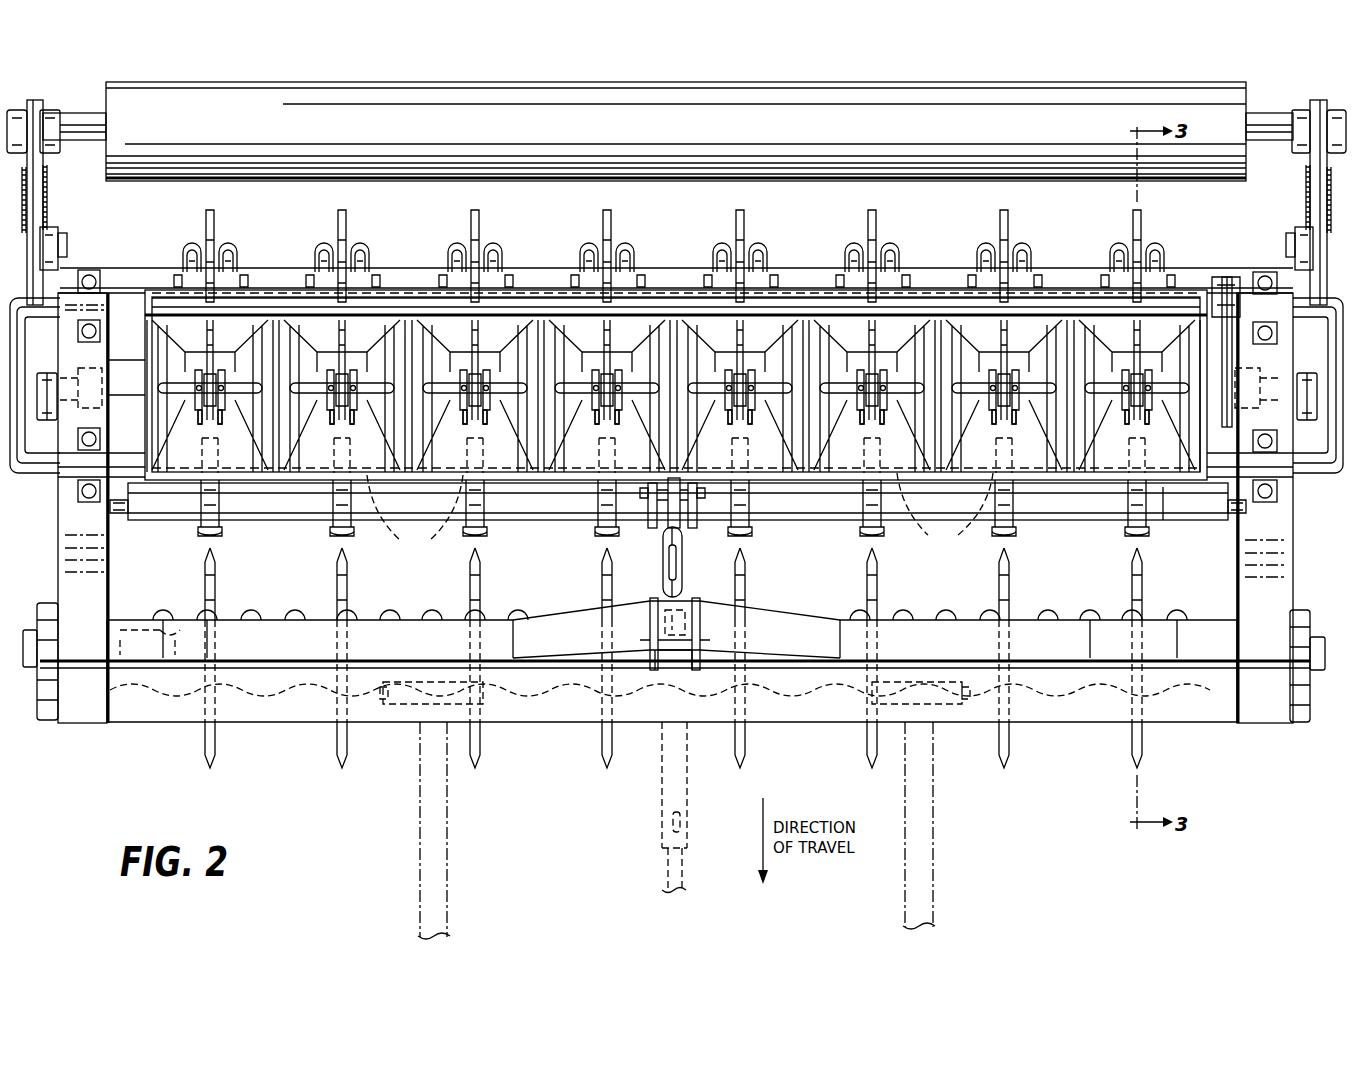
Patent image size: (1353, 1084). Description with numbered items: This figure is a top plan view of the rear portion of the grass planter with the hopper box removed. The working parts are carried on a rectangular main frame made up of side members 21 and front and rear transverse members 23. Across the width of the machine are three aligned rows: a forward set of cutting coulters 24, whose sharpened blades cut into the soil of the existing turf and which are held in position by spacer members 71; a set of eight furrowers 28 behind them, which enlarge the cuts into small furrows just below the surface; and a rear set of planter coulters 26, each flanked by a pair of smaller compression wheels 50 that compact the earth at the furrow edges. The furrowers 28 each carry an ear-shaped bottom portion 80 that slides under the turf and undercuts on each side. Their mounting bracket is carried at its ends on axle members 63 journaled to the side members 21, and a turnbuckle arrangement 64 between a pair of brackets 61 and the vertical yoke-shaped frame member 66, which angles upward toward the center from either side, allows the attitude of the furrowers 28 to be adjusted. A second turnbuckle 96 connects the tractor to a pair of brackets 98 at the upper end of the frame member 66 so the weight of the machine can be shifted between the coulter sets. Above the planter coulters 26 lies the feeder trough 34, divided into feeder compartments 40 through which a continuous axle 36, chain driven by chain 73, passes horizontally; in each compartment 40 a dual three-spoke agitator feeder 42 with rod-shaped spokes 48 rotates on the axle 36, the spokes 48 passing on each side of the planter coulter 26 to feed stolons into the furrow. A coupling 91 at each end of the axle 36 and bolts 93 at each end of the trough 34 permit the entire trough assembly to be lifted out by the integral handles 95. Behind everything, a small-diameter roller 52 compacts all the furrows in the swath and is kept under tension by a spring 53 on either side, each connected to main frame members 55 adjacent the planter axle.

The side members 21 is at (65, 583).
The front and rear transverse members 23 is at (545, 272).
The cutting coulters 24 is at (216, 577).
The planter coulters 26 is at (215, 216).
The furrowers 28 is at (673, 497).
The feeder trough 34 is at (1163, 490).
The continuous axle 36 is at (123, 382).
The feeder compartments 40 is at (425, 350).
The agitator feeder 42 is at (198, 412).
The spokes 48 is at (350, 416).
The compression wheels 50 is at (190, 247).
The roller 52 is at (692, 137).
The spring 53 is at (43, 173).
The main frame members 55 is at (43, 200).
The brackets 61 is at (652, 528).
The axle members 63 is at (123, 515).
The turnbuckle arrangement 64 is at (682, 556).
The vertical yoke-shaped frame member 66 is at (494, 637).
The spacer members 71 is at (303, 612).
The chain 73 is at (1214, 277).
The bottom portion 80 is at (318, 485).
The coupling 91 is at (102, 405).
The bolts 93 is at (97, 277).
The handle 95 is at (47, 307).
The turnbuckle 96 is at (660, 802).
The brackets 98 is at (655, 650).